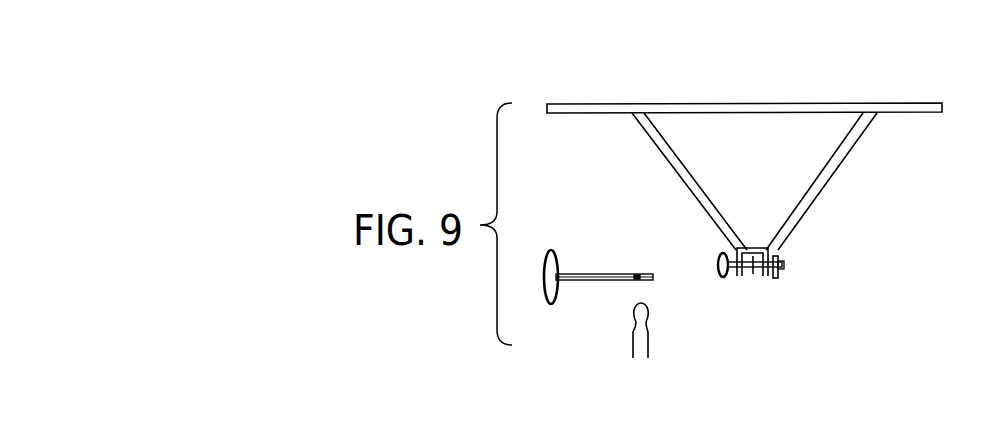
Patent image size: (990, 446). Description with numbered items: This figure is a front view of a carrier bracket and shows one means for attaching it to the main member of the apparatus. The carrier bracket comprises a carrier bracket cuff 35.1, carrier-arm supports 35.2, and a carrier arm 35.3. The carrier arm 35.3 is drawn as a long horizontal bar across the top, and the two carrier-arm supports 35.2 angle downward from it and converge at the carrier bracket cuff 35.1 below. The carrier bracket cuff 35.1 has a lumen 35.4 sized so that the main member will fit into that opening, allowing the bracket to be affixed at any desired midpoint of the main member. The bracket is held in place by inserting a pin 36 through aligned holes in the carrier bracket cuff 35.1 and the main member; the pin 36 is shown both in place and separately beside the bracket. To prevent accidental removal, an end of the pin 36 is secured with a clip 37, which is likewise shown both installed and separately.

The carrier bracket cuff 35.1 is at (767, 248).
The carrier-arm supports 35.2 is at (658, 153).
The carrier arm 35.3 is at (920, 103).
The lumen 35.4 is at (753, 262).
The pin 36 is at (717, 263).
The clip 37 is at (783, 277).